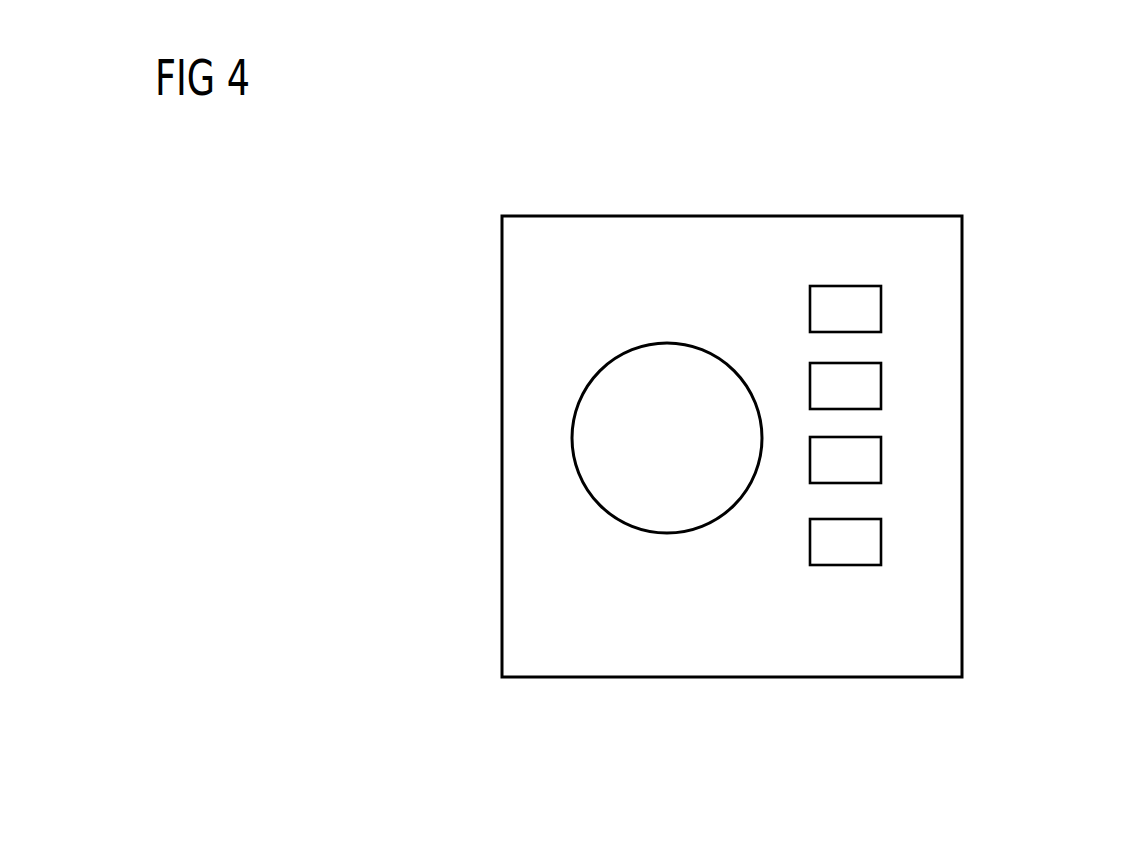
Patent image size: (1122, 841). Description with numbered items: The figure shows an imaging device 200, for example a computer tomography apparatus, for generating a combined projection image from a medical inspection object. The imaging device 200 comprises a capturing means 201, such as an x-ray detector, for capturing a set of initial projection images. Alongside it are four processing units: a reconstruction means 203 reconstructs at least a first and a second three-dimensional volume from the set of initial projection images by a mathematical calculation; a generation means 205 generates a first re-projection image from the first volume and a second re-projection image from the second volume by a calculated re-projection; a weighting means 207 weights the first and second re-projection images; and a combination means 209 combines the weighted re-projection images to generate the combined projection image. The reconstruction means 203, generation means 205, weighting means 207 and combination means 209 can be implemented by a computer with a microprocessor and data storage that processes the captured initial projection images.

The imaging device 200 is at (418, 287).
The capturing means 201 is at (627, 438).
The reconstruction means 203 is at (864, 308).
The generation means 205 is at (864, 387).
The weighting means 207 is at (863, 460).
The combination means 209 is at (863, 547).